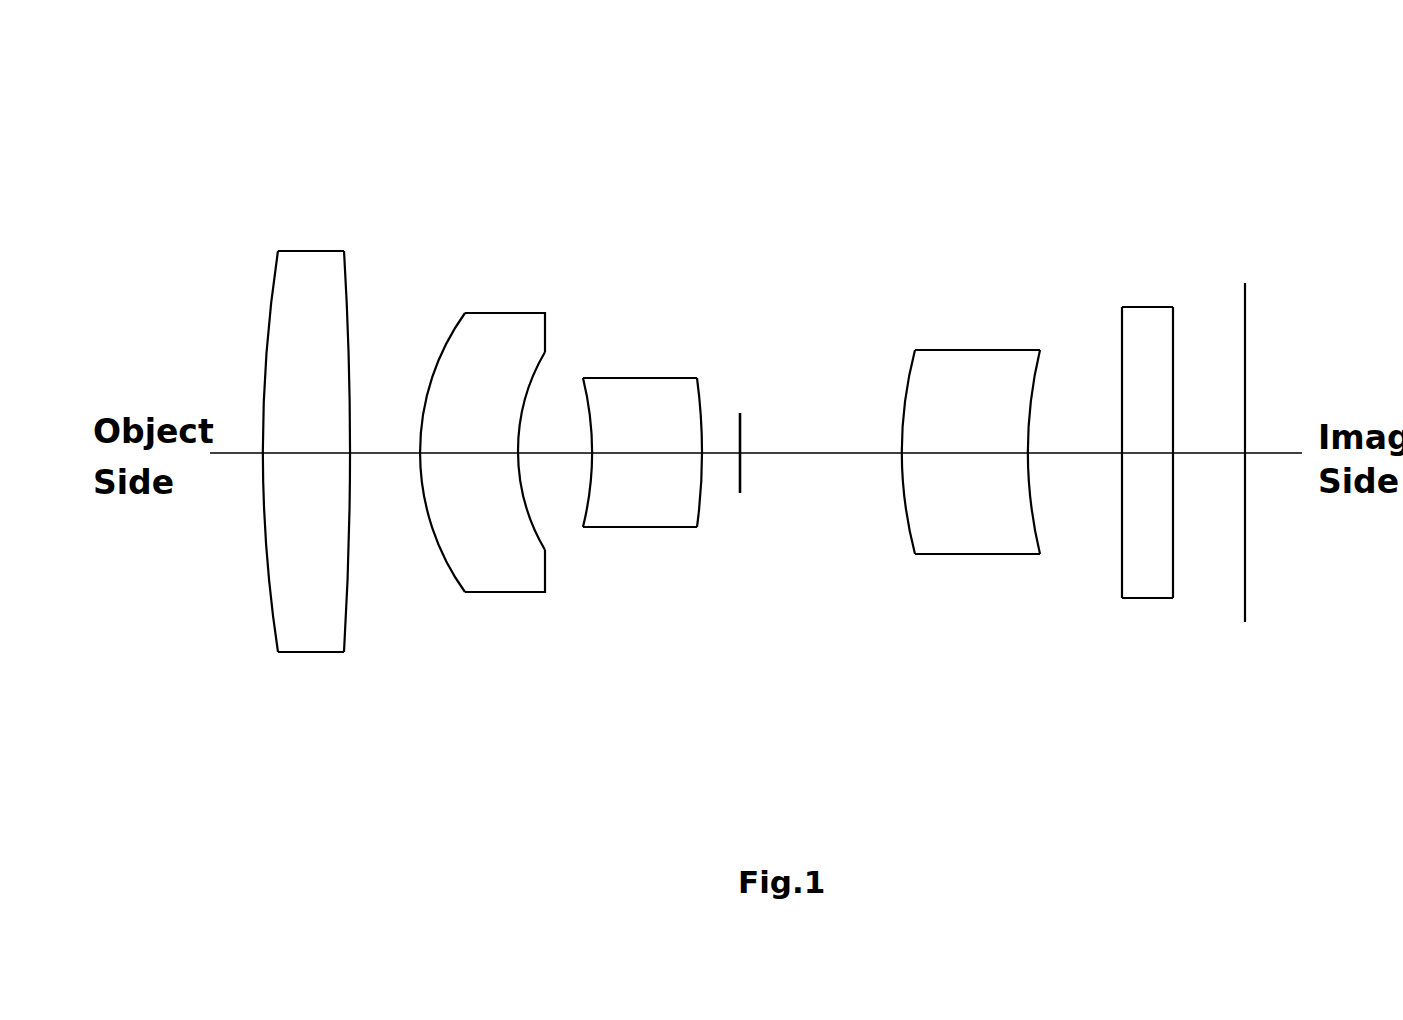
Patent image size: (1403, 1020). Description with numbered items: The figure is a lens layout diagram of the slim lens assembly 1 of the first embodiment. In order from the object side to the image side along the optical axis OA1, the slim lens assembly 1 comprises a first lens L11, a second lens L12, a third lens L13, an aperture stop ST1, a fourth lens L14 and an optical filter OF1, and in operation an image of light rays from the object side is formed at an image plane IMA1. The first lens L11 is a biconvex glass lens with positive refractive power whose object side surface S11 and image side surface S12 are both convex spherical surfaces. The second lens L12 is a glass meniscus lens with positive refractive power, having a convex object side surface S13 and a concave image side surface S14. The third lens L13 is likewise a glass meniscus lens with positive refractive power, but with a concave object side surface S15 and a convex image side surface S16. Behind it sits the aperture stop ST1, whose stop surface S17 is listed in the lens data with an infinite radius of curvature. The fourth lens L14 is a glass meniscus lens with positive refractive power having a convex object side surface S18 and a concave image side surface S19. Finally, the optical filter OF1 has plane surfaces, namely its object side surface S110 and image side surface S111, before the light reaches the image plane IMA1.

The slim lens assembly 1 is at (152, 84).
The first lens L11 is at (352, 462).
The second lens L12 is at (524, 465).
The third lens L13 is at (681, 427).
The aperture stop ST1 is at (810, 419).
The fourth lens L14 is at (970, 445).
The optical filter OF1 is at (1223, 458).
The image plane IMA1 is at (1245, 283).
The optical axis OA1 is at (247, 455).
The object side surface S11 is at (276, 615).
The image side surface S12 is at (346, 598).
The object side surface S13 is at (440, 590).
The image side surface S14 is at (518, 503).
The object side surface S15 is at (592, 477).
The image side surface S16 is at (700, 487).
The stop surface S17 is at (740, 493).
The object side surface S18 is at (903, 493).
The image side surface S19 is at (1032, 510).
The object side surface S110 is at (1122, 565).
The image side surface S111 is at (1173, 563).